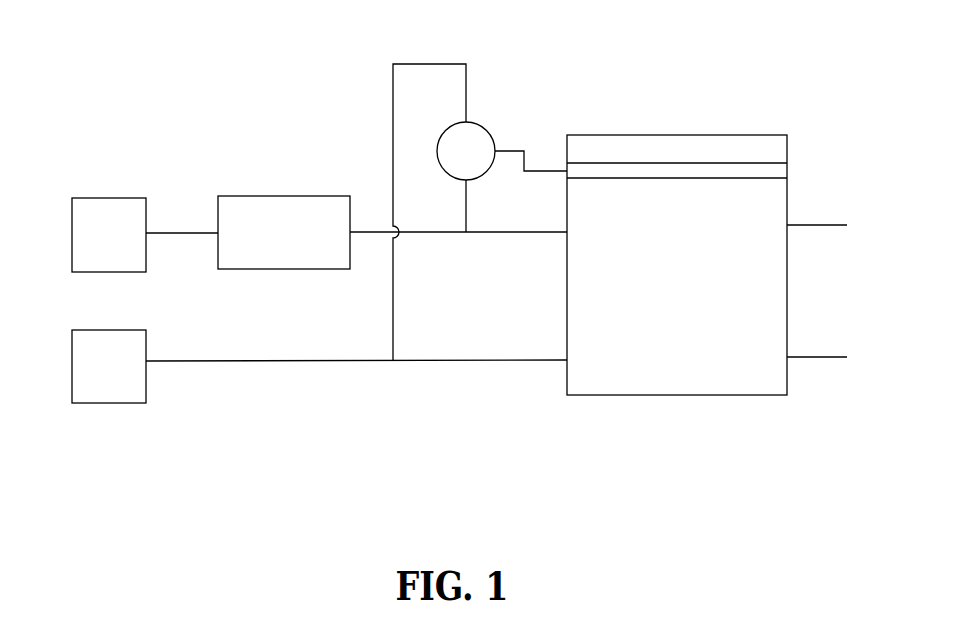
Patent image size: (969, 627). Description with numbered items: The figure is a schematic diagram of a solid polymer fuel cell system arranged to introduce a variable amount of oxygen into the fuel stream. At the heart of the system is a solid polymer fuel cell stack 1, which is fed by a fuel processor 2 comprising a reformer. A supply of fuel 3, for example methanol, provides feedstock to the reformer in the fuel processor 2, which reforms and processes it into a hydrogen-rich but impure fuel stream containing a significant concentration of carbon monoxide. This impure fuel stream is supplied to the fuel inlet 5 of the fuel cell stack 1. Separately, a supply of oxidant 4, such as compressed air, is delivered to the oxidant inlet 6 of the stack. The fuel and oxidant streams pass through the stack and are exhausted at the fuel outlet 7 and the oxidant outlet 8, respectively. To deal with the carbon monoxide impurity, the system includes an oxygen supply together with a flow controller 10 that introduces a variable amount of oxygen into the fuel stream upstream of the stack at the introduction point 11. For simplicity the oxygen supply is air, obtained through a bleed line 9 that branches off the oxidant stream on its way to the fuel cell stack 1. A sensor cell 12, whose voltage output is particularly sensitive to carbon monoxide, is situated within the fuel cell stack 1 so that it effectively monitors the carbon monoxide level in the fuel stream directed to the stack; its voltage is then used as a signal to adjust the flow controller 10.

The solid polymer fuel cell stack 1 is at (745, 210).
The fuel processor 2 is at (236, 214).
The supply of fuel 3 is at (86, 216).
The supply of oxidant 4 is at (88, 358).
The fuel inlet 5 is at (562, 233).
The oxidant inlet 6 is at (562, 363).
The fuel outlet 7 is at (792, 230).
The oxidant outlet 8 is at (792, 363).
The bleed line 9 is at (391, 137).
The flow controller 10 is at (478, 145).
The oxygen introduction point 11 is at (461, 235).
The sensor cell 12 is at (688, 170).